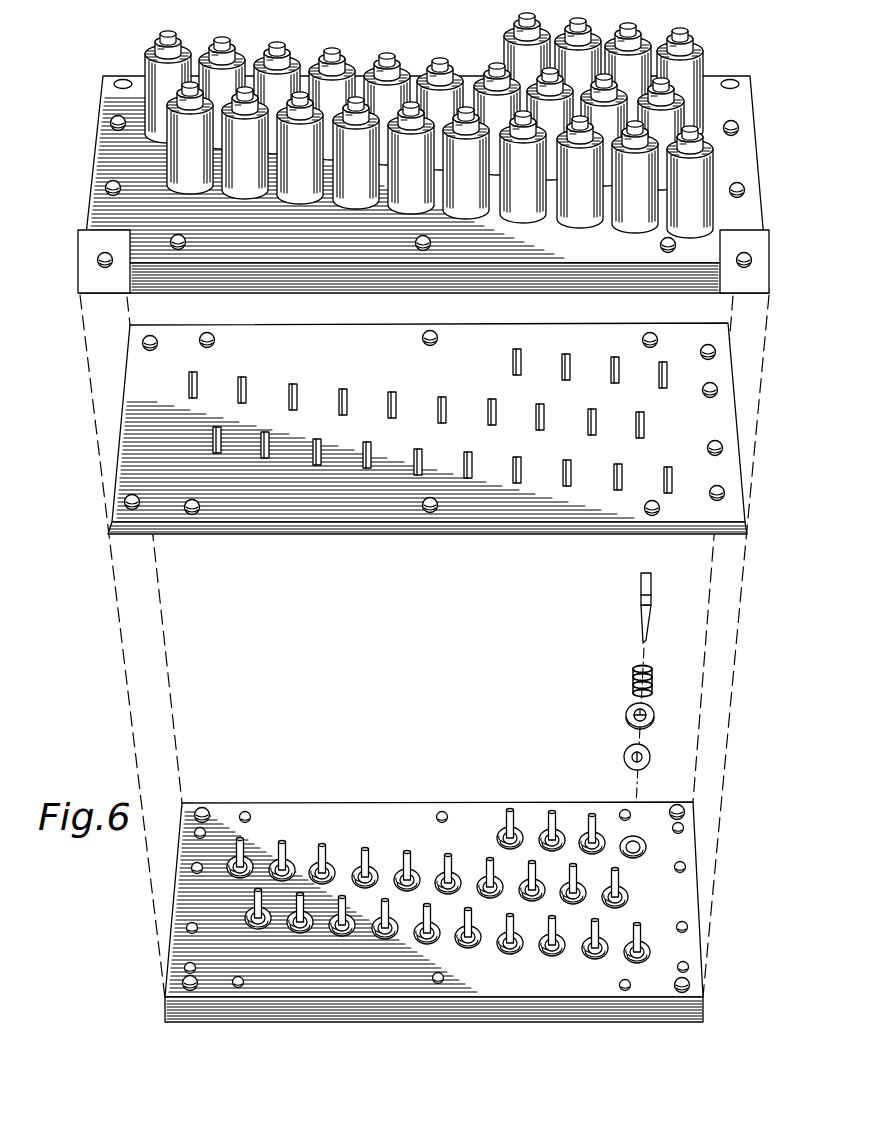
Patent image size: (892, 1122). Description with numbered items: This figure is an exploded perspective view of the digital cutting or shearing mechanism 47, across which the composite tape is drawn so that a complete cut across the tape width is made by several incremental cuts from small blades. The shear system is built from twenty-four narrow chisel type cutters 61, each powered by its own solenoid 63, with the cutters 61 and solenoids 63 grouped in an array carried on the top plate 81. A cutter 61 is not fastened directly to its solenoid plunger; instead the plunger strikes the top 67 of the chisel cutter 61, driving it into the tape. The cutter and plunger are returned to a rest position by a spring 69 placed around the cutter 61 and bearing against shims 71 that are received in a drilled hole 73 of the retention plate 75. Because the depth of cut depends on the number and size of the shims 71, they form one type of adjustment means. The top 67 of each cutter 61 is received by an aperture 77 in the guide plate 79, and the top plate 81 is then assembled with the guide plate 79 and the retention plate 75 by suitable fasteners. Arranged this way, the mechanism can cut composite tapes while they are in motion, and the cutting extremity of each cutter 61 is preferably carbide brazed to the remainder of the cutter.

The digital cutting or shearing mechanism 47 is at (66, 188).
The chisel type cutter 61 is at (640, 632).
The solenoid 63 is at (712, 167).
The top of the chisel cutter 67 is at (641, 590).
The spring 69 is at (633, 683).
The shims 71 is at (627, 720).
The drilled hole 73 is at (648, 838).
The retention plate 75 is at (703, 905).
The aperture 77 is at (668, 466).
The guide plate 79 is at (746, 514).
The top plate 81 is at (764, 196).